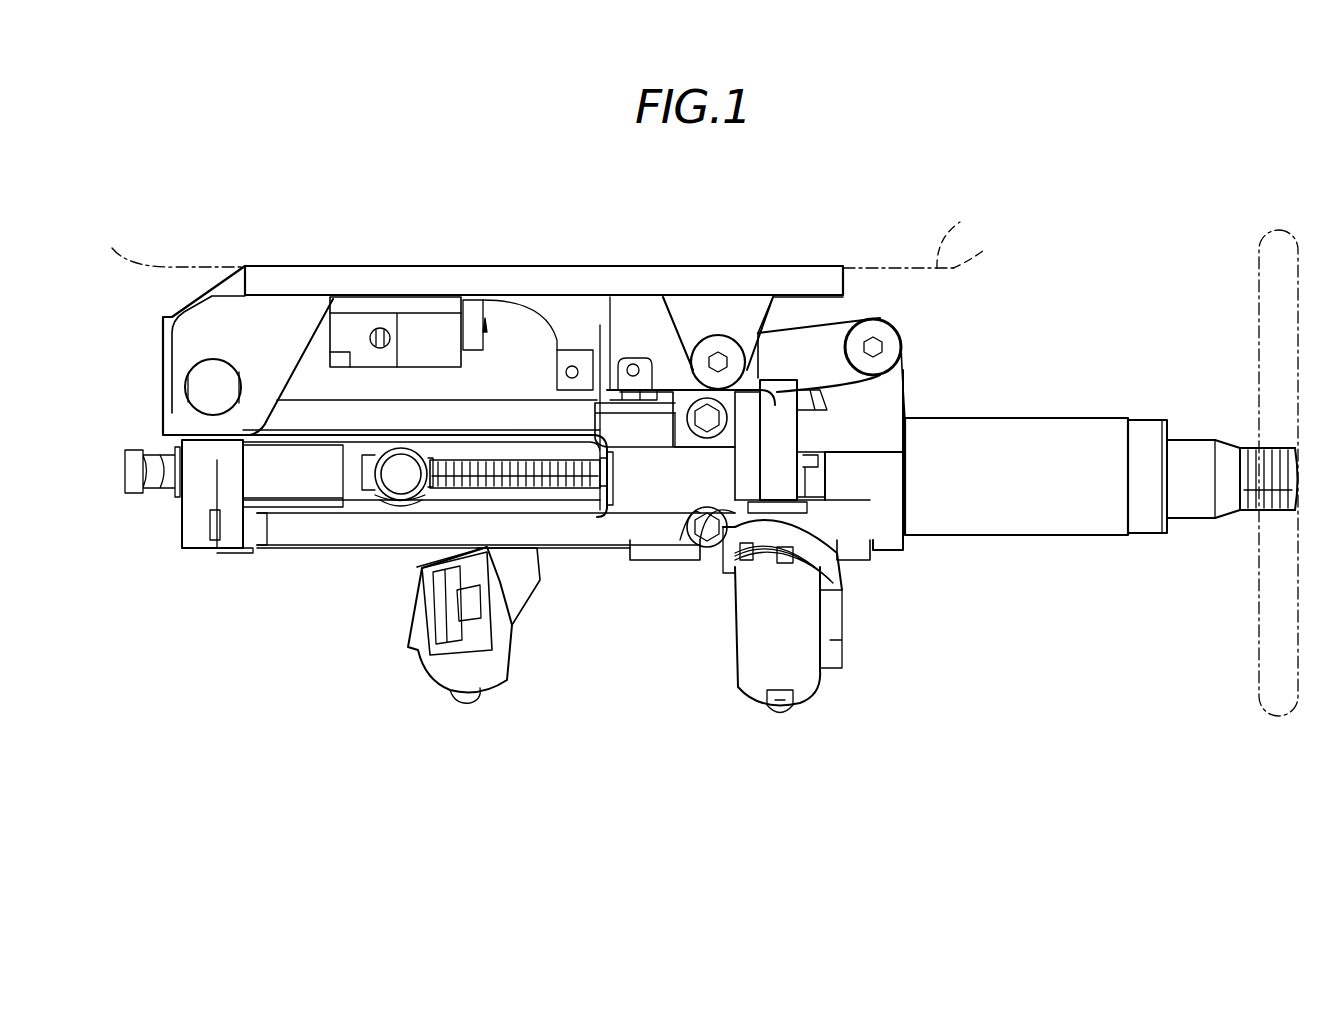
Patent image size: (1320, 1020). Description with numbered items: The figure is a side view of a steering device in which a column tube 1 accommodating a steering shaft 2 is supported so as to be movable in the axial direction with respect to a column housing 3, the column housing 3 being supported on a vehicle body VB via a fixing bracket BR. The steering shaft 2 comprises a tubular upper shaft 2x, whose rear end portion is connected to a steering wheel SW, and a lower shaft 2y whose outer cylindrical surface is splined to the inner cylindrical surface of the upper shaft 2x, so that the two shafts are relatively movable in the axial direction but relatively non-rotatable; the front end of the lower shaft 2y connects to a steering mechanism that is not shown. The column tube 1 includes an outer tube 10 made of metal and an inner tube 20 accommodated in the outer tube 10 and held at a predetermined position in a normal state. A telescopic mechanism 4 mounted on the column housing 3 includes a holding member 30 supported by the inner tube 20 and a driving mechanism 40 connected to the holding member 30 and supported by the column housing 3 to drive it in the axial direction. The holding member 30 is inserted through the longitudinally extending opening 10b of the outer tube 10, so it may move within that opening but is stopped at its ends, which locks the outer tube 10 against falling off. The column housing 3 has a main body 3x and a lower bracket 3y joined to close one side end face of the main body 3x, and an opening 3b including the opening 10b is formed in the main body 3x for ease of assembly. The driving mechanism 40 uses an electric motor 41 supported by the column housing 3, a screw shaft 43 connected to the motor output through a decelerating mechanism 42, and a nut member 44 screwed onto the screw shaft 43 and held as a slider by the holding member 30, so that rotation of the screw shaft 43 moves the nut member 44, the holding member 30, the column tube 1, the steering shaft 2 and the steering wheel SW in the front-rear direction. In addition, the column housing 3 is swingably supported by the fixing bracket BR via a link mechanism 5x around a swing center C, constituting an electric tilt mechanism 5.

The column tube 1 is at (1020, 412).
The steering shaft 2 is at (1208, 438).
The upper shaft 2x is at (1198, 505).
The lower shaft 2y is at (150, 482).
The column housing 3 is at (912, 392).
The main body 3x is at (885, 530).
The lower bracket 3y is at (197, 513).
The opening 3b is at (303, 505).
The telescopic mechanism 4 is at (850, 590).
The electric tilt mechanism 5 is at (540, 580).
The link mechanism 5x is at (852, 320).
The outer tube 10 is at (1030, 520).
The opening 10b is at (422, 485).
The inner tube 20 is at (547, 495).
The holding member 30 is at (377, 502).
The driving mechanism 40 is at (715, 567).
The electric motor 41 is at (750, 670).
The decelerating mechanism 42 is at (747, 480).
The screw shaft 43 is at (583, 478).
The nut member 44 is at (382, 495).
The fixing bracket BR is at (205, 322).
The swing center C is at (214, 387).
The vehicle body VB is at (555, 245).
The steering wheel SW is at (1262, 683).